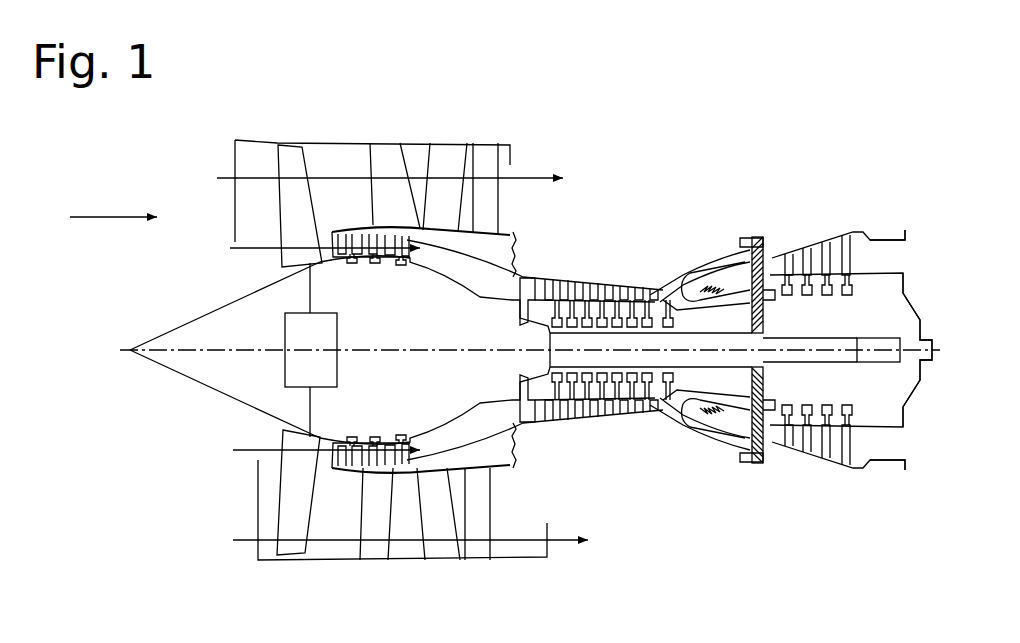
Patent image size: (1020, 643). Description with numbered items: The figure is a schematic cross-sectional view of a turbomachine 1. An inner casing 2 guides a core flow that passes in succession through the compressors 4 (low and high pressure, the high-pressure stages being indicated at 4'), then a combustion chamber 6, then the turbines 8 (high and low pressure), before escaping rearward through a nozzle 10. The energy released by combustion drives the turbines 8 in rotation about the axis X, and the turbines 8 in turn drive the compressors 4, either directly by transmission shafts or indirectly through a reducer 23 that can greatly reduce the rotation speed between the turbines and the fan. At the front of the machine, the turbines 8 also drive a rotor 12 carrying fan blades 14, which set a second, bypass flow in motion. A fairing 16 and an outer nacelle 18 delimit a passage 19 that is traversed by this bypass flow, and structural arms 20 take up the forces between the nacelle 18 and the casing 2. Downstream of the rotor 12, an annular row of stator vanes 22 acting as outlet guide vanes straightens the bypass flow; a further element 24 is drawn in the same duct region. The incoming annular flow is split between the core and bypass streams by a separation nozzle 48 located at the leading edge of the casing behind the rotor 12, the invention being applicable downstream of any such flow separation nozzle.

The turbomachine 1 is at (702, 163).
The inner casing 2 is at (488, 255).
The compressors 4 is at (421, 350).
The high-pressure compressor 4' is at (596, 317).
The combustion chamber 6 is at (693, 287).
The turbines 8 is at (835, 247).
The nozzle 10 is at (878, 252).
The rotor 12 is at (213, 377).
The fan blades 14 is at (295, 200).
The fairing 16 is at (367, 227).
The nacelle 18 is at (312, 138).
The passage 19 is at (500, 505).
The structural arms 20 is at (447, 163).
The stator vanes 22 is at (382, 162).
The reducer 23 is at (317, 370).
The bypass duct strut 24 is at (482, 163).
The separation nozzle 48 is at (328, 477).
The axis X is at (412, 353).